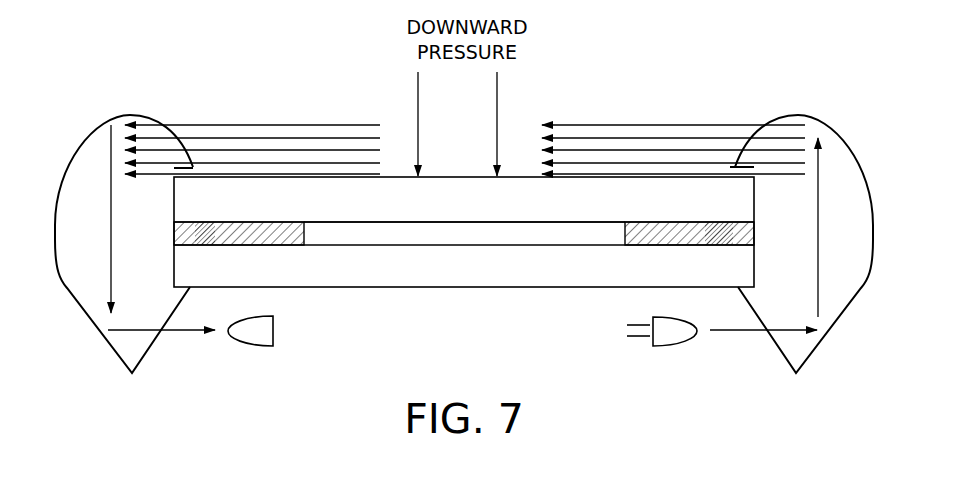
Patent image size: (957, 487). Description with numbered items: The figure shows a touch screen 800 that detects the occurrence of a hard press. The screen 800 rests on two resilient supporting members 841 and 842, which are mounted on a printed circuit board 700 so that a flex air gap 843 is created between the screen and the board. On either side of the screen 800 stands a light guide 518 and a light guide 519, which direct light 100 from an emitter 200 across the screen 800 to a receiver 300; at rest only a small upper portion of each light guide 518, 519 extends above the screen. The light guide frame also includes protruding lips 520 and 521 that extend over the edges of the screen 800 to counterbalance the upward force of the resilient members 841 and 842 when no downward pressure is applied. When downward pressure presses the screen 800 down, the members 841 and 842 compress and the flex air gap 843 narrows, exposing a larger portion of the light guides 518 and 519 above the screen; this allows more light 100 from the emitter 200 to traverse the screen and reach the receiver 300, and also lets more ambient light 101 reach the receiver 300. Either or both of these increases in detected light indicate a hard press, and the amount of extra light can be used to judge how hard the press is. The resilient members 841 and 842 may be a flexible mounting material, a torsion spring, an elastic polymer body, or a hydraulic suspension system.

The light 100 is at (462, 216).
The ambient light 101 is at (197, 175).
The emitter 200 is at (662, 344).
The receiver 300 is at (250, 344).
The light guide 518 is at (83, 142).
The light guide 519 is at (853, 141).
The protruding lip 520 is at (175, 171).
The protruding lip 521 is at (754, 172).
The printed circuit board 700 is at (464, 261).
The touch screen 800 is at (464, 227).
The resilient supporting member 841 is at (239, 232).
The resilient supporting member 842 is at (689, 231).
The flex air gap 843 is at (464, 228).